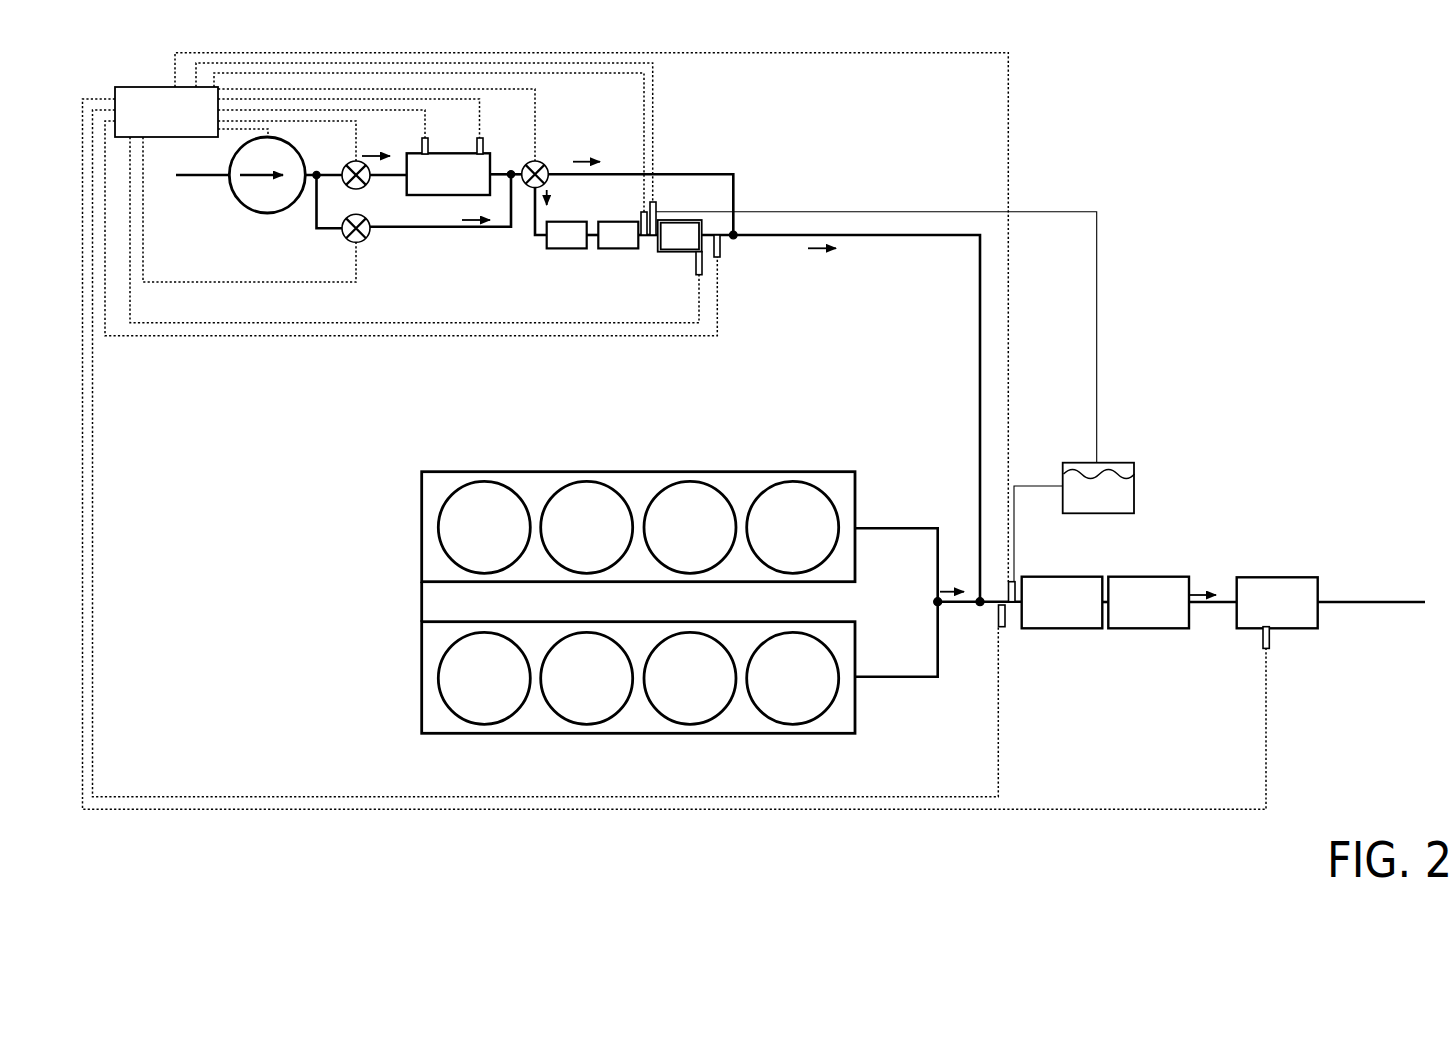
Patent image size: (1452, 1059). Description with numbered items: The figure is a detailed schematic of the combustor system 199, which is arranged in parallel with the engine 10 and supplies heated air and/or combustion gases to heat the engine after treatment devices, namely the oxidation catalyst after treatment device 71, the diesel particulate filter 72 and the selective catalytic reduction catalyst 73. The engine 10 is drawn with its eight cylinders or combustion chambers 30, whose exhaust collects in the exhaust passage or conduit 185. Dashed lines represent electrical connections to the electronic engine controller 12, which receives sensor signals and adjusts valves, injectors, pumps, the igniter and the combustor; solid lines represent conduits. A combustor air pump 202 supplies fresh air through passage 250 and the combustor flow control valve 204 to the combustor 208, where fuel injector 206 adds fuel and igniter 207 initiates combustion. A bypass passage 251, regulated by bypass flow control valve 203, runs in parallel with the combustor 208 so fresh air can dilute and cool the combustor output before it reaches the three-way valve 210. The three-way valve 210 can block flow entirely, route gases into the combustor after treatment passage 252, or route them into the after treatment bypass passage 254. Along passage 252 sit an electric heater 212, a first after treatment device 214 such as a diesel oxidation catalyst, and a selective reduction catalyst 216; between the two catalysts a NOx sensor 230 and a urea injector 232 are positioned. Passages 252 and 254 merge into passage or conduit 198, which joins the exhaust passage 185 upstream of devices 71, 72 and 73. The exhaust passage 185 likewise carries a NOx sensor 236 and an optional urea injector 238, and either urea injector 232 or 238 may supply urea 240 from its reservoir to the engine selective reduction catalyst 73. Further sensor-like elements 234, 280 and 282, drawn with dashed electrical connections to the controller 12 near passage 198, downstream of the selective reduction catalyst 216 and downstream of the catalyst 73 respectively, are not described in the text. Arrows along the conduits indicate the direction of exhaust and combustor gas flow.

The internal combustion engine 10 is at (397, 514).
The electronic engine controller 12 is at (179, 124).
The combustion chamber 30 is at (621, 627).
The after treatment device 71 is at (1065, 603).
The diesel particulate filter 72 is at (1172, 603).
The selective catalytic reduction catalyst 73 is at (1331, 602).
The exhaust passage 185 is at (960, 606).
The passage 198 is at (980, 421).
The combustor system 199 is at (753, 97).
The combustor air pump 202 is at (270, 214).
The bypass flow control valve 203 is at (344, 237).
The combustor flow control valve 204 is at (367, 190).
The fuel injector 206 is at (429, 152).
The igniter 207 is at (484, 152).
The combustor 208 is at (472, 196).
The three-way valve 210 is at (549, 168).
The electric heater 212 is at (571, 252).
The first after treatment device 214 is at (641, 251).
The selective reduction catalyst 216 is at (690, 254).
The NOx sensor 230 is at (641, 216).
The urea injector 232 is at (657, 212).
The sensor 234 is at (720, 258).
The NOx sensor 236 is at (1003, 628).
The urea injector 238 is at (1015, 586).
The urea 240 is at (1116, 502).
The passage 250 is at (227, 174).
The bypass passage 251 is at (450, 228).
The combustor after treatment passage 252 is at (537, 231).
The after treatment bypass passage 254 is at (712, 174).
The sensor 280 is at (697, 277).
The sensor 282 is at (1268, 649).